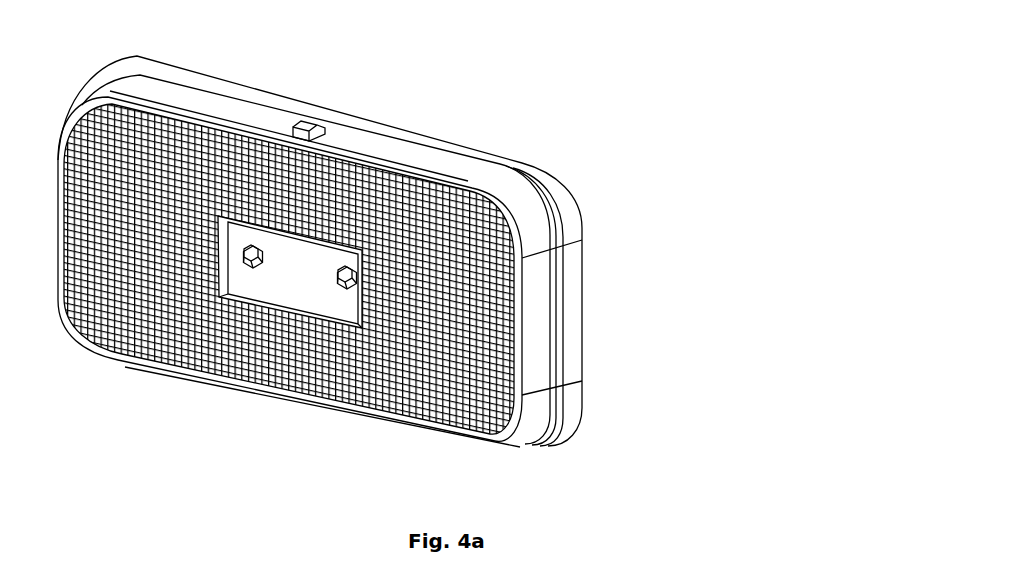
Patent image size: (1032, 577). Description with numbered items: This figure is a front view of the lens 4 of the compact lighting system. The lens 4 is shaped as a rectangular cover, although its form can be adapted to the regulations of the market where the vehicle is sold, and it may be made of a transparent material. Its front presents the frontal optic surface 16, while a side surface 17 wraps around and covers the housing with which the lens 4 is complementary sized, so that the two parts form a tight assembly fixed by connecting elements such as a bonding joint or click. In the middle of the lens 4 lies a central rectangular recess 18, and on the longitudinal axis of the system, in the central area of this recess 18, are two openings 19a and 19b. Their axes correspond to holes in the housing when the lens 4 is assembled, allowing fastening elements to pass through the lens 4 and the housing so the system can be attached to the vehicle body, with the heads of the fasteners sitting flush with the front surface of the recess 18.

The lens 4 is at (510, 312).
The frontal optic surface 16 is at (310, 178).
The side surface 17 is at (520, 212).
The central rectangular recess 18 is at (325, 243).
The opening 19a is at (250, 268).
The opening 19b is at (348, 290).